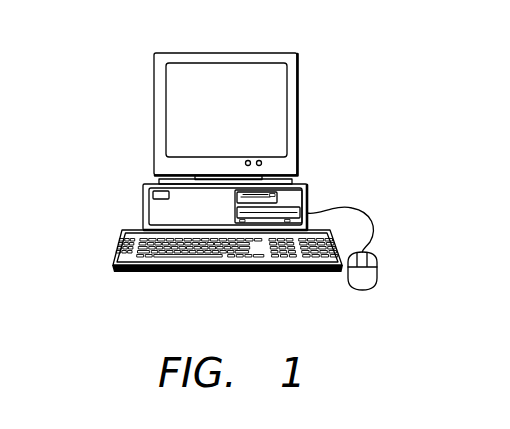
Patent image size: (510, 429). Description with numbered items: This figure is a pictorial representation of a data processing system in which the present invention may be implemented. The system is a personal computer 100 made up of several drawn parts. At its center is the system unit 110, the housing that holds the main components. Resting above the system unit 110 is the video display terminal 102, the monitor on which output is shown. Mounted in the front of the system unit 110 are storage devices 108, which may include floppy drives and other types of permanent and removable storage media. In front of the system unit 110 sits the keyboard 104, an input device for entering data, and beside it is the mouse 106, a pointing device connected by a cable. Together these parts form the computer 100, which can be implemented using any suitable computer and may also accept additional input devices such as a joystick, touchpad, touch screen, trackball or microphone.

The computer 100 is at (90, 100).
The video display terminal 102 is at (298, 114).
The keyboard 104 is at (136, 273).
The mouse 106 is at (362, 290).
The storage devices 108 is at (280, 193).
The system unit 110 is at (143, 190).